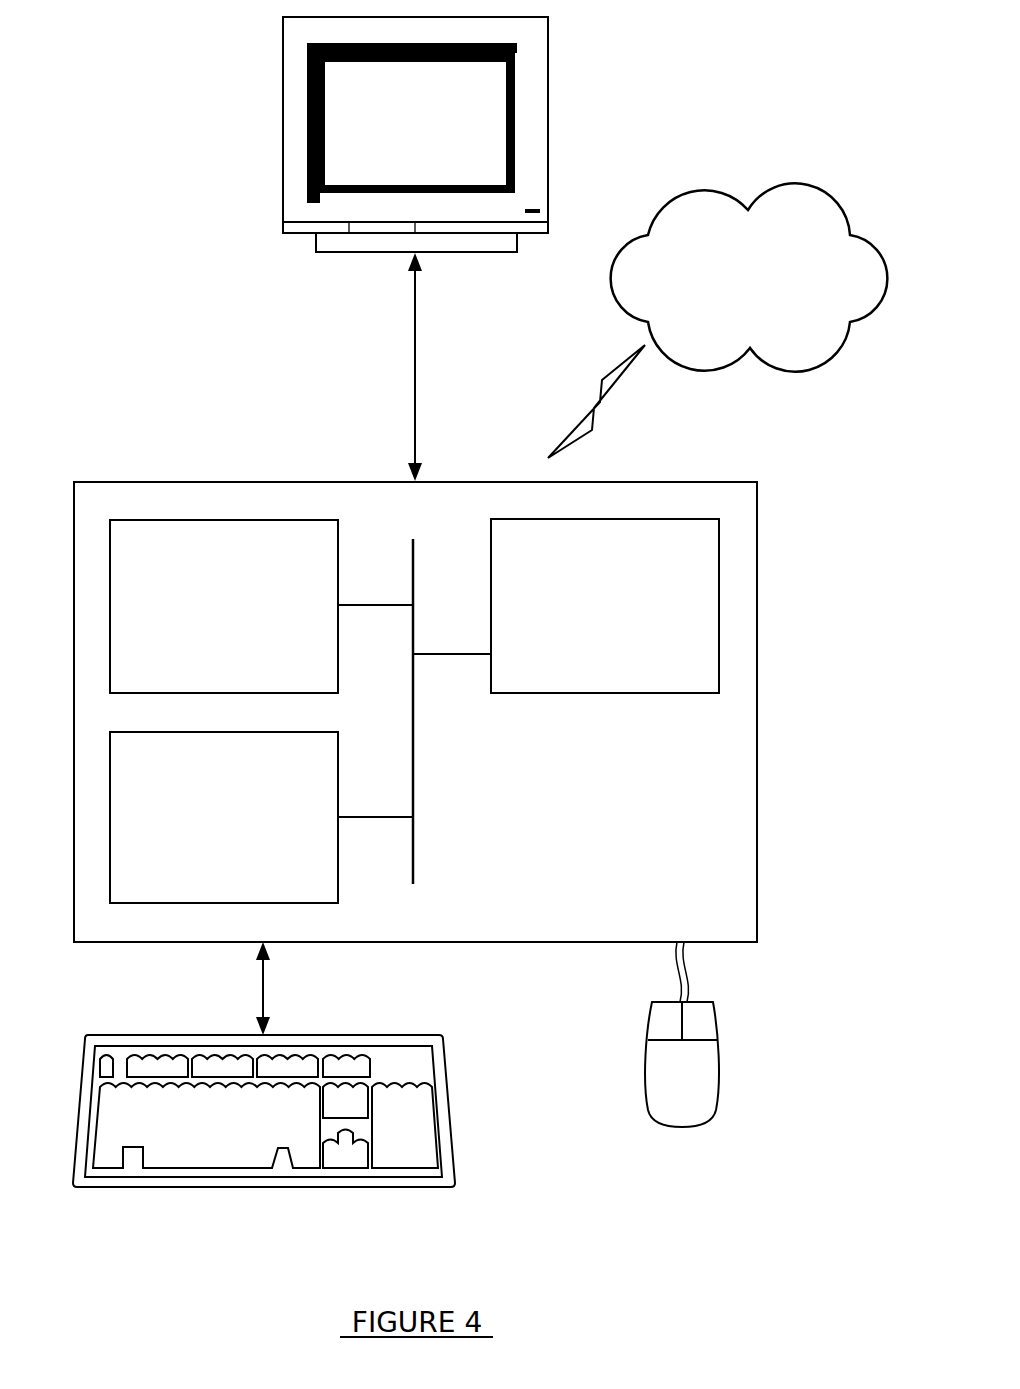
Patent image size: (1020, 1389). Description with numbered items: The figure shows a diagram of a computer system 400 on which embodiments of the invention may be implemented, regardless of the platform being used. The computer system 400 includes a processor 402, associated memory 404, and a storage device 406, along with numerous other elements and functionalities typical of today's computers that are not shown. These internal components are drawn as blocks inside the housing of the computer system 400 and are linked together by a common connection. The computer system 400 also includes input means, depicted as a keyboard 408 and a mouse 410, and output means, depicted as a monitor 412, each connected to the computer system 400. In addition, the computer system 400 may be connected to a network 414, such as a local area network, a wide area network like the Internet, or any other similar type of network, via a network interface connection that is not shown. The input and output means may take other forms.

The computer system 400 is at (782, 552).
The processor 402 is at (625, 619).
The memory 404 is at (245, 619).
The storage device 406 is at (245, 831).
The keyboard 408 is at (229, 1139).
The mouse 410 is at (704, 1087).
The monitor 412 is at (437, 137).
The network 414 is at (770, 290).